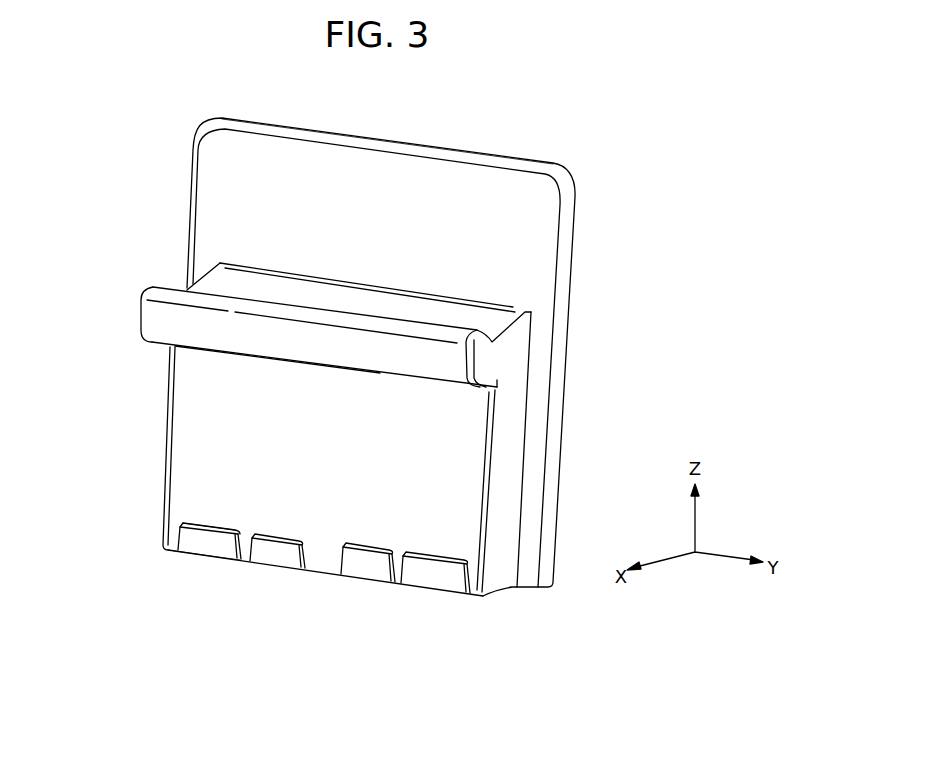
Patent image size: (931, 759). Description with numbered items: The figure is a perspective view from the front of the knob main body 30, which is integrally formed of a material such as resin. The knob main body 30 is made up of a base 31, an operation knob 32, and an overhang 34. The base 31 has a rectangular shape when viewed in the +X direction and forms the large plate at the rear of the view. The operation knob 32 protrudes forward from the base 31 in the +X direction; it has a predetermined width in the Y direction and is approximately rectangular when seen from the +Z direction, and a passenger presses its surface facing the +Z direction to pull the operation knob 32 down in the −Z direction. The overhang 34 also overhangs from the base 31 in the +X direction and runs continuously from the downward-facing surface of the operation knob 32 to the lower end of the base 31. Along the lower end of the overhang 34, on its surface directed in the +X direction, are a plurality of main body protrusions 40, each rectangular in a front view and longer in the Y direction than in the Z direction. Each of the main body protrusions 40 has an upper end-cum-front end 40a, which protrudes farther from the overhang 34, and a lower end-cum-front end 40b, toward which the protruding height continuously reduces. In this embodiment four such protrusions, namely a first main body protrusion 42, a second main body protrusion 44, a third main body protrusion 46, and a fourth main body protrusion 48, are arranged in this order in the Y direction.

The knob main body 30 is at (603, 186).
The base 31 is at (480, 200).
The operation knob 32 is at (185, 322).
The overhang 34 is at (210, 390).
The main body protrusions 40 is at (324, 609).
The upper end-cum-front end 40a is at (203, 523).
The lower end-cum-front end 40b is at (200, 553).
The first main body protrusion 42 is at (215, 548).
The second main body protrusion 44 is at (277, 557).
The third main body protrusion 46 is at (362, 567).
The fourth main body protrusion 48 is at (435, 601).